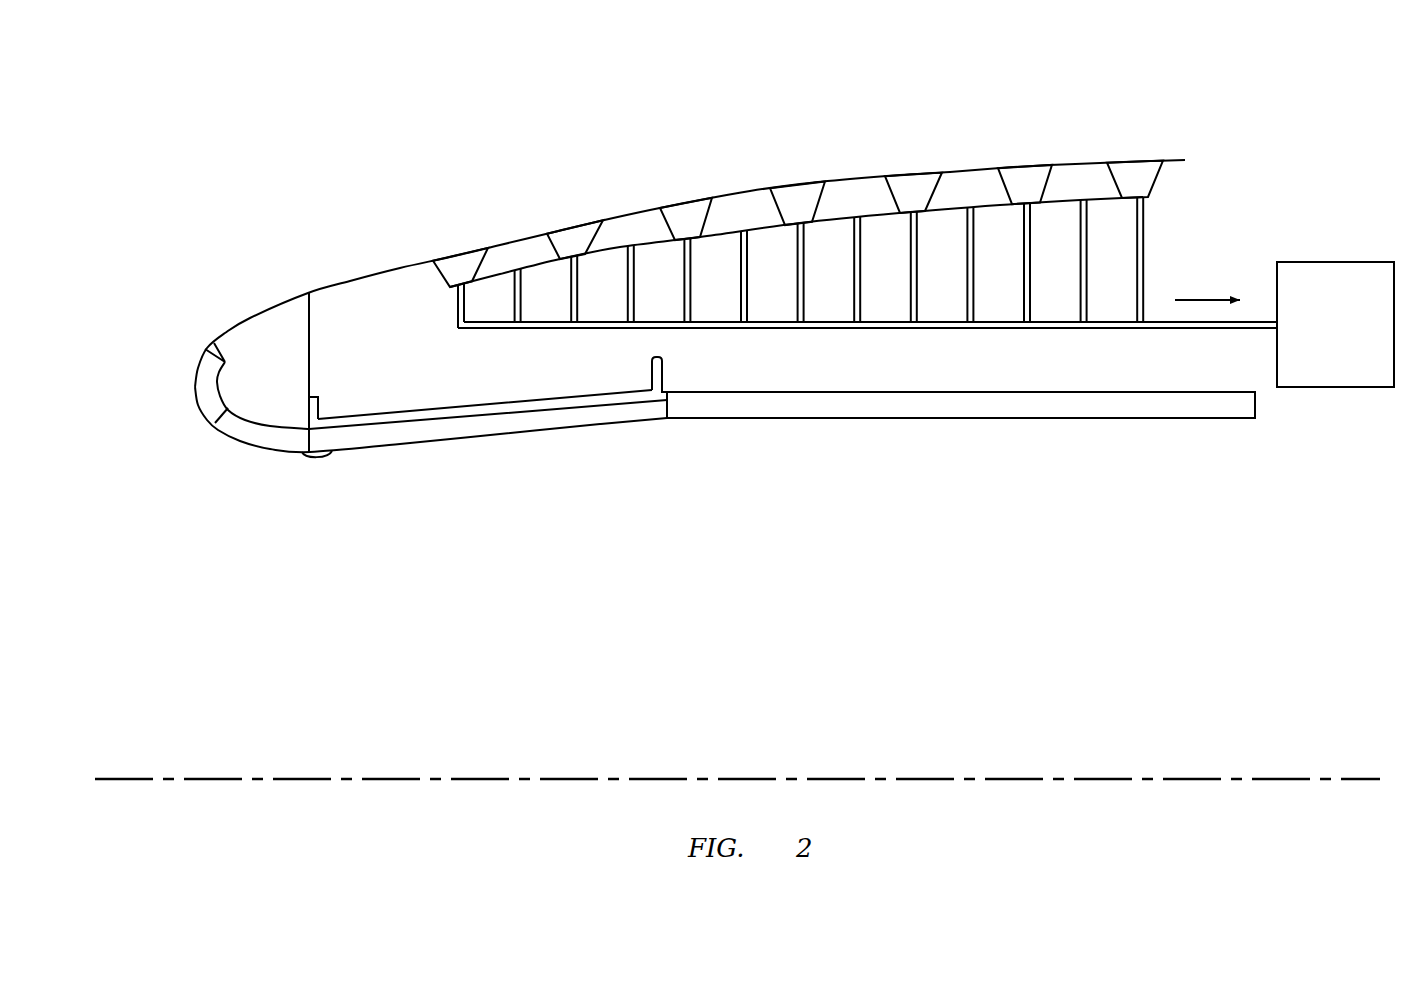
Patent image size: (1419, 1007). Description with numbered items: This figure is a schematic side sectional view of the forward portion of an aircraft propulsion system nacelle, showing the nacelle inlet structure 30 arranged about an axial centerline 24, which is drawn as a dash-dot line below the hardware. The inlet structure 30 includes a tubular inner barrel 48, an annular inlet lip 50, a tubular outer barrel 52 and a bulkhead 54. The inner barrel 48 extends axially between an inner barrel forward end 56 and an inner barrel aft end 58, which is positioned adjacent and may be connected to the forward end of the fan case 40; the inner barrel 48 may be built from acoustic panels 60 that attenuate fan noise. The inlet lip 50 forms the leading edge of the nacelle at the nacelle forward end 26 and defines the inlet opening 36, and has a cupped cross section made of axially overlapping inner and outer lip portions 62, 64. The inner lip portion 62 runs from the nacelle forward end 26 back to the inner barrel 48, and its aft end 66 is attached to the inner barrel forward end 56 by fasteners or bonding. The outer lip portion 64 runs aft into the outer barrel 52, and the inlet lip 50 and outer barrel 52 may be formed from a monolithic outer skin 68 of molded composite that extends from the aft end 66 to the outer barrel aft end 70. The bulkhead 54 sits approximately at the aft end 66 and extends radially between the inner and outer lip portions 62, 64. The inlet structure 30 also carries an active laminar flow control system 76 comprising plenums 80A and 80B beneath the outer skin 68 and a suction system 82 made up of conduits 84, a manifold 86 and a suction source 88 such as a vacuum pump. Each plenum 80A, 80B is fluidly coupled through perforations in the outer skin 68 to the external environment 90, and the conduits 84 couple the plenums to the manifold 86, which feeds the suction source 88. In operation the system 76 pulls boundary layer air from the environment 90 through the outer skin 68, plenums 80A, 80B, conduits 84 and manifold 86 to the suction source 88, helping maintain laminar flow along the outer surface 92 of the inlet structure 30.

The external outside environment 90 is at (562, 66).
The nacelle inlet structure 30 is at (547, 187).
The tubular outer barrel 52 is at (397, 258).
The outer surface 92 is at (370, 272).
The monolithic outer skin 68 is at (338, 280).
The outer lip portion 64 is at (250, 318).
The nacelle forward end 26 is at (192, 388).
The bulkhead 54 is at (310, 347).
The annular inlet lip 50 is at (230, 440).
The inner lip portion 62 is at (263, 447).
The inner barrel forward end 56 is at (307, 450).
The aft end of the inner lip portion 66 is at (328, 450).
The acoustic panel 60 is at (423, 440).
The tubular inner barrel 48 is at (480, 452).
The inner barrel aft end 58 is at (663, 423).
The fan case 40 is at (757, 420).
The conduits 84 is at (517, 313).
The manifold 86 is at (605, 330).
The suction system 82 is at (1088, 345).
The active laminar flow control system 76 is at (1237, 207).
The outer barrel aft end 70 is at (1185, 160).
The plenum 80A is at (443, 255).
The plenum 80B is at (510, 240).
The suction source 88 is at (1320, 367).
The inlet opening 36 is at (208, 604).
The axial centerline 24 is at (1375, 775).